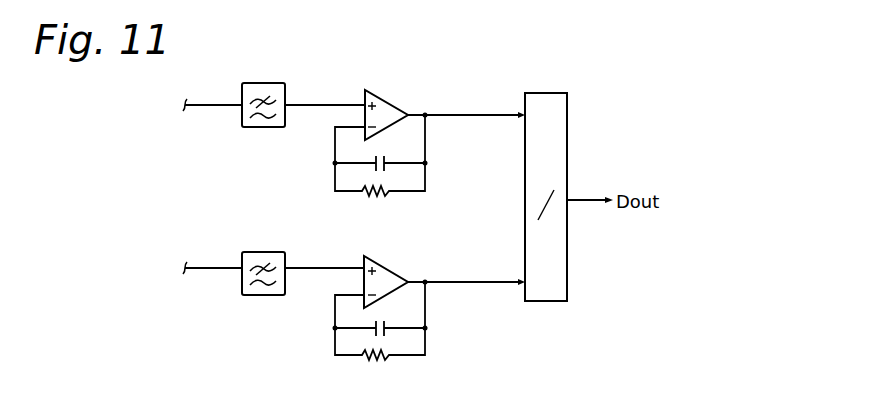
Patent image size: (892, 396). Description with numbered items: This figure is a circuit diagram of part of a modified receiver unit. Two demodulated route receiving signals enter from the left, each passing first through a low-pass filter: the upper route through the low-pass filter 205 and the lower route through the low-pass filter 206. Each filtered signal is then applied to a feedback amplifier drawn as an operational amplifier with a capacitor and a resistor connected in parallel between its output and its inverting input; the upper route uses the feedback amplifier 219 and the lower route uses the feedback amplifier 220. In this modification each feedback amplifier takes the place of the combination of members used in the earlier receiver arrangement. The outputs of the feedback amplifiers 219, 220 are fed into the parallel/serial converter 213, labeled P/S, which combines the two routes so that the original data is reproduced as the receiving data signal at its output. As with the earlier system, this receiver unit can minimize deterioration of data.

The low-pass filter 205 is at (262, 83).
The low-pass filter 206 is at (262, 252).
The feedback amplifier 219 is at (388, 90).
The feedback amplifier 220 is at (389, 258).
The parallel/serial converter 213 is at (548, 93).